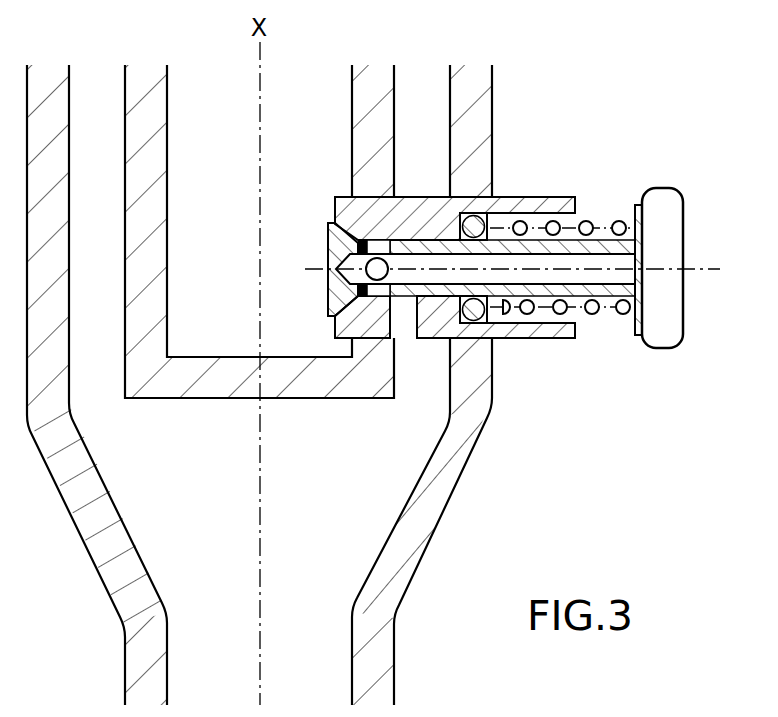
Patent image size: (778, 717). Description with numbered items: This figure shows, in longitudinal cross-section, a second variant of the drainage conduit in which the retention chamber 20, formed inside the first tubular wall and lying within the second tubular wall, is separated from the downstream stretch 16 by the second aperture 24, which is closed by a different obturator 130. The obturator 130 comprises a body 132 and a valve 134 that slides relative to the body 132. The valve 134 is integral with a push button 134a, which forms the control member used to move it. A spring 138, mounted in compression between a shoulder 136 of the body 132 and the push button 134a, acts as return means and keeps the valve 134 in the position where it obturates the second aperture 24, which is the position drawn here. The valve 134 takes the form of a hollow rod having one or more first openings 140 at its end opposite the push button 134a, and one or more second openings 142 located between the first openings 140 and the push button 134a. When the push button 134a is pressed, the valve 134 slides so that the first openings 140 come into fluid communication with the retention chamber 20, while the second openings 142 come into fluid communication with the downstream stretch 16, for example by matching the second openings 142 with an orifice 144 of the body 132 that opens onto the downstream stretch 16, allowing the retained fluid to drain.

The downstream stretch 16 is at (309, 680).
The retention chamber 20 is at (211, 102).
The second aperture 24 is at (372, 330).
The obturator 130 is at (591, 164).
The body 132 is at (460, 197).
The valve 134 is at (337, 290).
The push button 134a is at (672, 236).
The shoulder 136 is at (506, 322).
The spring 138 is at (620, 312).
The first openings 140 is at (345, 256).
The second openings 142 is at (440, 302).
The orifice 144 is at (403, 326).